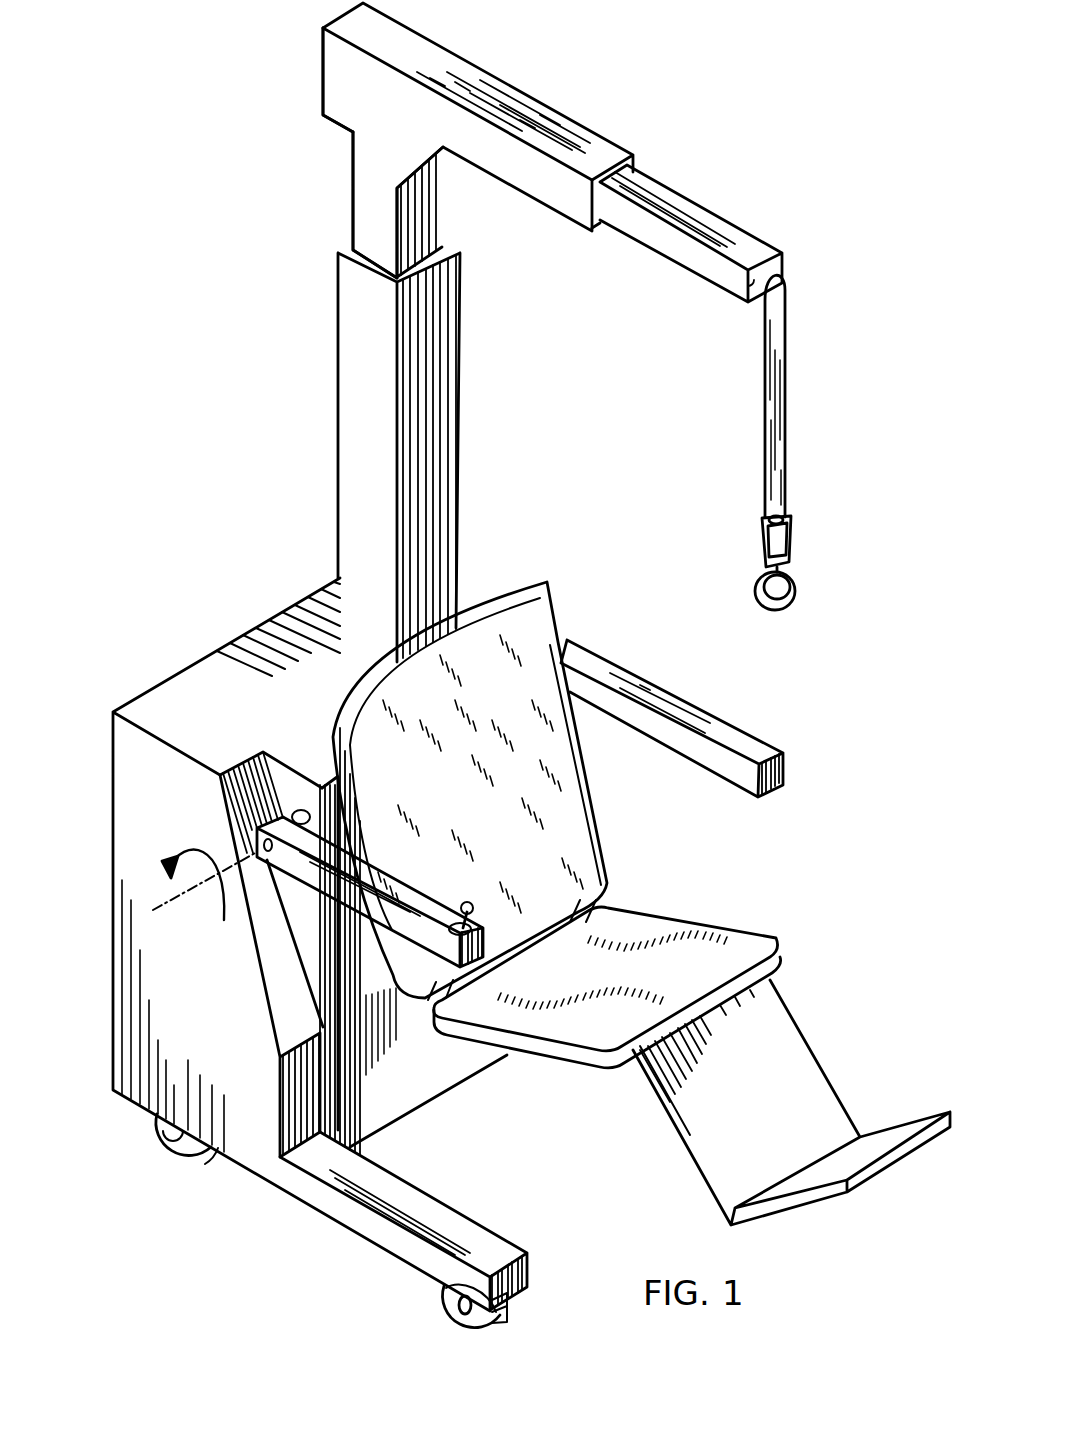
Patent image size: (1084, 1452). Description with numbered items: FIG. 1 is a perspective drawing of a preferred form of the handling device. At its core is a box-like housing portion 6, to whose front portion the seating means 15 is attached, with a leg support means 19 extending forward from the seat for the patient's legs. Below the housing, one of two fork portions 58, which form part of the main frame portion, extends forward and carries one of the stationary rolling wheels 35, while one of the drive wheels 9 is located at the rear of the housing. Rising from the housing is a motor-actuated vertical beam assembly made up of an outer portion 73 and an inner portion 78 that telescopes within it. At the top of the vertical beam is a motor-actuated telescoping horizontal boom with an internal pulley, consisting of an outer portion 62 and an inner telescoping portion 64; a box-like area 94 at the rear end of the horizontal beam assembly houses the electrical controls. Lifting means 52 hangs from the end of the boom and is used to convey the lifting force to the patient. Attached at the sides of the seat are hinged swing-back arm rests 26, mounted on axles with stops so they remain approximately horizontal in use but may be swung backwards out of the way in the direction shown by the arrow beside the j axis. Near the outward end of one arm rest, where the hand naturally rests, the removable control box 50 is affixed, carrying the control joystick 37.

The box-like housing portion 6 is at (160, 783).
The drive wheel 9 is at (163, 1140).
The seating means 15 is at (582, 828).
The leg support means 19 is at (812, 1075).
The swing-back arm rests 26 is at (640, 675).
The stationary (rolling) wheels 35 is at (438, 1297).
The control joystick 37 is at (474, 906).
The removable control box 50 is at (430, 910).
The lifting means 52 is at (773, 420).
The fork portion 58 is at (487, 1237).
The outer portion of the motor-actuated telescoping horizontal boom 62 is at (538, 108).
The inner telescoping portion of the horizontal boom 64 is at (705, 215).
The outer portion of the motor-actuated vertical beam assembly 73 is at (330, 338).
The inner portion of the motor-actuated vertical beam assembly 78 is at (362, 208).
The box-like area housing electrical controls 94 is at (343, 82).